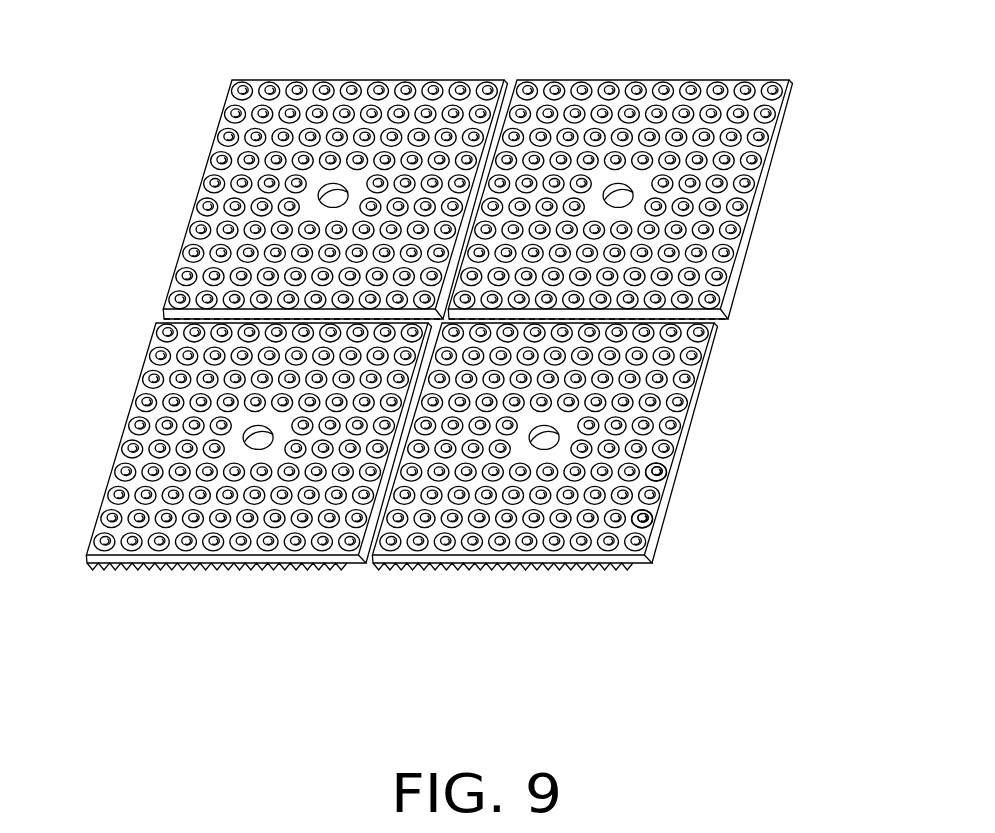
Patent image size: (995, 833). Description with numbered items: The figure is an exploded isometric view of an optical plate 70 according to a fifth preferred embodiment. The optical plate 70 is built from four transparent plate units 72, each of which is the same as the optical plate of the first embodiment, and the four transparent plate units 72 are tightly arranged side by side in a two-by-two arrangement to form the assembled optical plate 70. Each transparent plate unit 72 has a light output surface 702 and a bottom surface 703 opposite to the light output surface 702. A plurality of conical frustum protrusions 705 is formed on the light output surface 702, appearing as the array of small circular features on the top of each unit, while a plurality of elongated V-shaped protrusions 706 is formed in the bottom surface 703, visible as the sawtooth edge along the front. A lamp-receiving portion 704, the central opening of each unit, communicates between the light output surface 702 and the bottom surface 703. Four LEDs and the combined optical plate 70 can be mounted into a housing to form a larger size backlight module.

The optical plate 70 is at (143, 55).
The transparent plate unit 72 is at (219, 123).
The light output surface 702 is at (662, 483).
The bottom surface 703 is at (647, 565).
The lamp-receiving portion 704 is at (548, 440).
The conical frustum protrusion 705 is at (645, 518).
The elongated V-shaped protrusion 706 is at (627, 568).